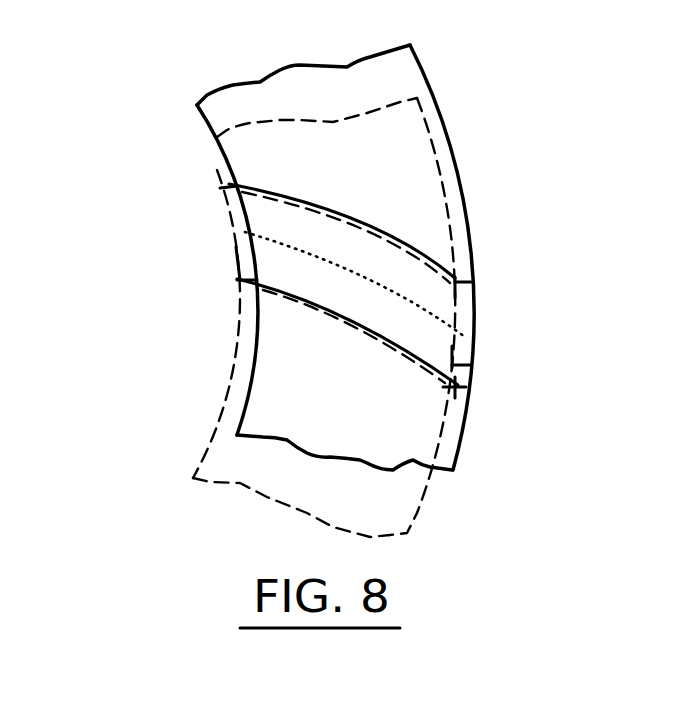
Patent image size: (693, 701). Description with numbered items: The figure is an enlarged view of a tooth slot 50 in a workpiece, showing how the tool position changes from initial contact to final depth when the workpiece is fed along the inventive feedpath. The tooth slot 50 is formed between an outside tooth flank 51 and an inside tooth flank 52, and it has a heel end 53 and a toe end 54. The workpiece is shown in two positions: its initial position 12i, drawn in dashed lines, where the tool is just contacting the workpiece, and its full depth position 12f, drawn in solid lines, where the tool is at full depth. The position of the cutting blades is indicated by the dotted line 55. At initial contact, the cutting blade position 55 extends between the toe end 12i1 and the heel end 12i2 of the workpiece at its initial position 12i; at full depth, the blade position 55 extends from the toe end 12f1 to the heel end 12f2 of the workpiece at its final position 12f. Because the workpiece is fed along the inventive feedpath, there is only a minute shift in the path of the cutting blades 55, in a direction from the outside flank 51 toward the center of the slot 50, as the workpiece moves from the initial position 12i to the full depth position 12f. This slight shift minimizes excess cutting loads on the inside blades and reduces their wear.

The initial position of workpiece 12i is at (214, 160).
The final position of workpiece 12f is at (437, 92).
The toe end at full depth position 12f1 is at (247, 210).
The toe end at initial contact position 12i1 is at (240, 275).
The heel end at full depth position 12f2 is at (475, 347).
The heel end at initial contact position 12i2 is at (466, 360).
The tooth slot 50 is at (366, 300).
The outside tooth flank 51 is at (345, 225).
The inside tooth flank 52 is at (437, 377).
The heel end 53 is at (467, 362).
The toe end 54 is at (242, 256).
The position of cutting blades 55 is at (433, 313).